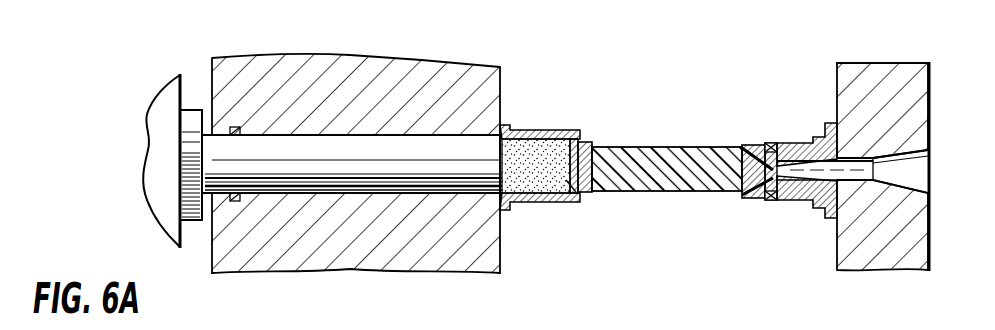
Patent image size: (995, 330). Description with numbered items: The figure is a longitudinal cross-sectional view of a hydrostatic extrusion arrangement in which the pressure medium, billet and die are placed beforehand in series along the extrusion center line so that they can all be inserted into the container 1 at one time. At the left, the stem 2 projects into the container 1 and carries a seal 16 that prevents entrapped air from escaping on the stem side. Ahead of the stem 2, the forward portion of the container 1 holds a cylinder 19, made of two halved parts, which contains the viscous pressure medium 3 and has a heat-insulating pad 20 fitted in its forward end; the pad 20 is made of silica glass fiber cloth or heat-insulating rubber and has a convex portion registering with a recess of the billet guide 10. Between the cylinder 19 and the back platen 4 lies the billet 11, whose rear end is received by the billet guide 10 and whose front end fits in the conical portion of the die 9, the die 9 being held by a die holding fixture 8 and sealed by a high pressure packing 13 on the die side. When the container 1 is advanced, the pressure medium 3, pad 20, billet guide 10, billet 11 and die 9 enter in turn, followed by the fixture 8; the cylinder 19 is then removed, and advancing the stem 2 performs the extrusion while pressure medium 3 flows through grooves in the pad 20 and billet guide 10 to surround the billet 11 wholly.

The container 1 is at (285, 66).
The stem 2 is at (323, 152).
The pressure medium 3 is at (549, 153).
The back platen 4 is at (857, 83).
The die holding fixture 8 is at (817, 137).
The die 9 is at (751, 143).
The billet guide 10 is at (588, 141).
The billet 11 is at (665, 146).
The high pressure packing 13 is at (773, 143).
The seal 16 is at (237, 125).
The cylinder 19 is at (529, 135).
The heat-insulating pad 20 is at (567, 195).